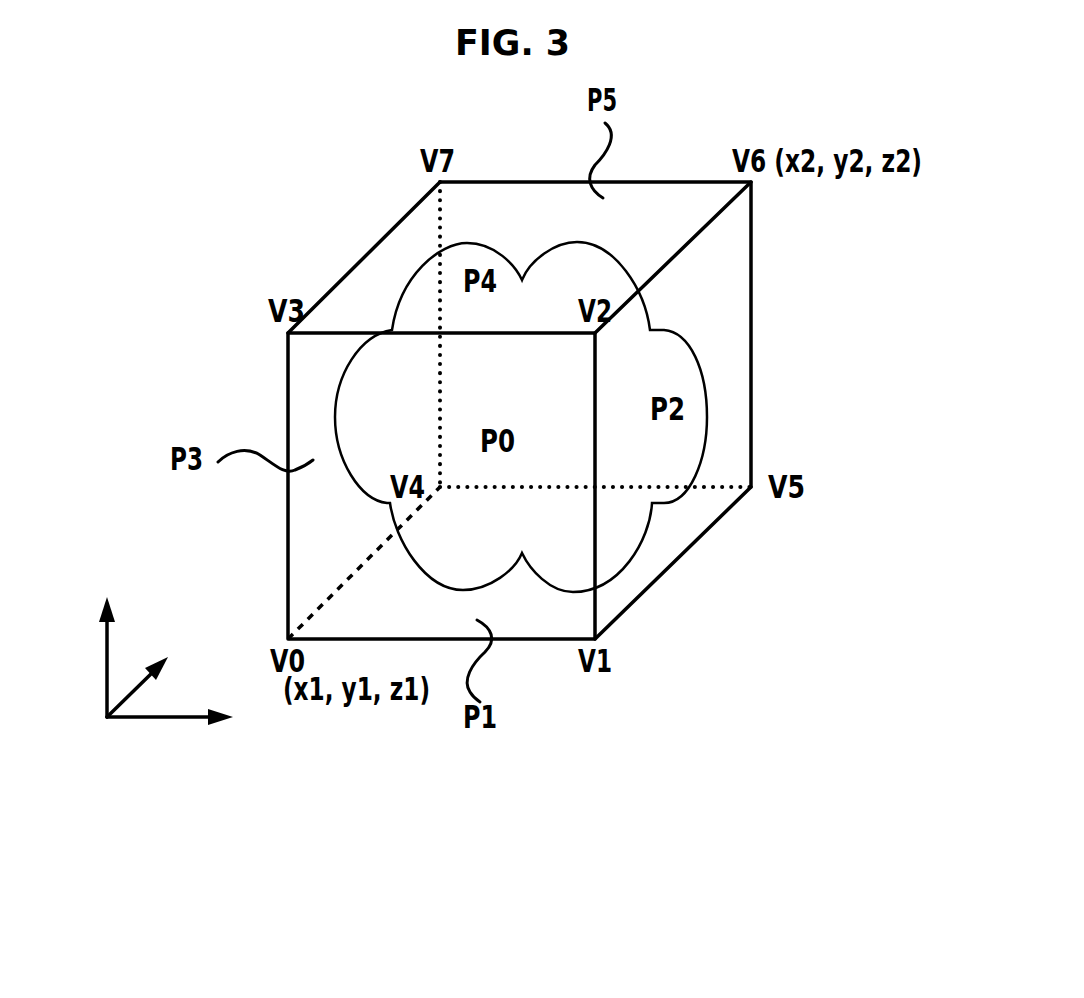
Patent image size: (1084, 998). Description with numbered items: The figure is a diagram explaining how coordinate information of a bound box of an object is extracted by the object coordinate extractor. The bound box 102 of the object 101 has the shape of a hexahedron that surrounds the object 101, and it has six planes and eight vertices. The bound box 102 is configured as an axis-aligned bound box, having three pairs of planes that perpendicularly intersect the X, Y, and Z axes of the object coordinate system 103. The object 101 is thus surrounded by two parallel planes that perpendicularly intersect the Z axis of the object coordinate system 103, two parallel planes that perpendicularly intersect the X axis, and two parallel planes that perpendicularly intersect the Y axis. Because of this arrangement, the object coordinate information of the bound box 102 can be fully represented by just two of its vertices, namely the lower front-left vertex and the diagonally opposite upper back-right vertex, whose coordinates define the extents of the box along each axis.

The object 101 is at (622, 539).
The bound box 102 is at (768, 300).
The object coordinate system 103 is at (123, 717).